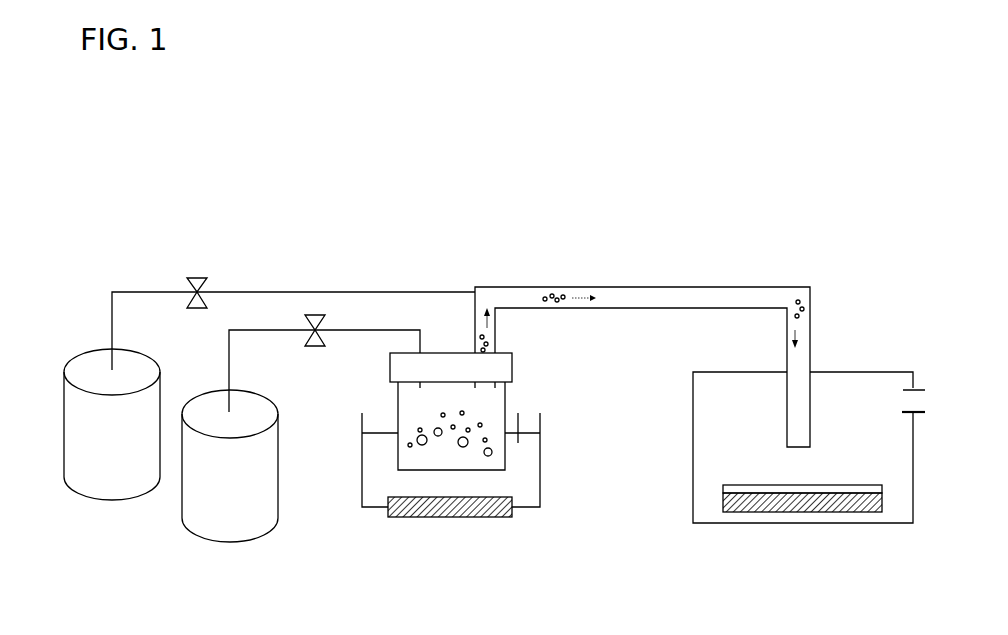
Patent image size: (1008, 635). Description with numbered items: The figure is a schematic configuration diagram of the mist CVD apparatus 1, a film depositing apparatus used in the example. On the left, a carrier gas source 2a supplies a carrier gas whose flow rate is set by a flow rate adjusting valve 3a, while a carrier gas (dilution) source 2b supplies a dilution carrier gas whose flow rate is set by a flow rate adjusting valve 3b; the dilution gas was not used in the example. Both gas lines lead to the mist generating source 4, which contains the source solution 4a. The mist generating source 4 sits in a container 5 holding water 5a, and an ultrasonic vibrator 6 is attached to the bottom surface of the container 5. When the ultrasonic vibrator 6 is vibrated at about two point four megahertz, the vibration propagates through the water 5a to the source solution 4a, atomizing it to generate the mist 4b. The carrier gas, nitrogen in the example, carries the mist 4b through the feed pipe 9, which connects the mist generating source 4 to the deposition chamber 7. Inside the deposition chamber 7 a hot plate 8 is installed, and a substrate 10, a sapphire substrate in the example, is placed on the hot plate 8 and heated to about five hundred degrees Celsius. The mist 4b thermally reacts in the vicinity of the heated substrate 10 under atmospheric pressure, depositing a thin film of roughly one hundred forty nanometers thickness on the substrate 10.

The mist CVD apparatus 1 is at (266, 160).
The carrier gas source 2a is at (193, 515).
The carrier gas (dilution) source 2b is at (77, 440).
The flow rate adjusting valve 3a is at (313, 348).
The flow rate adjusting valve 3b is at (197, 277).
The mist generating source 4 is at (392, 410).
The source solution 4a is at (398, 462).
The mist 4b is at (555, 287).
The container 5 is at (540, 463).
The water 5a is at (518, 413).
The ultrasonic vibrator 6 is at (453, 517).
The deposition chamber 7 is at (693, 493).
The hot plate 8 is at (860, 512).
The feed pipe 9 is at (683, 287).
The substrate 10 is at (737, 485).